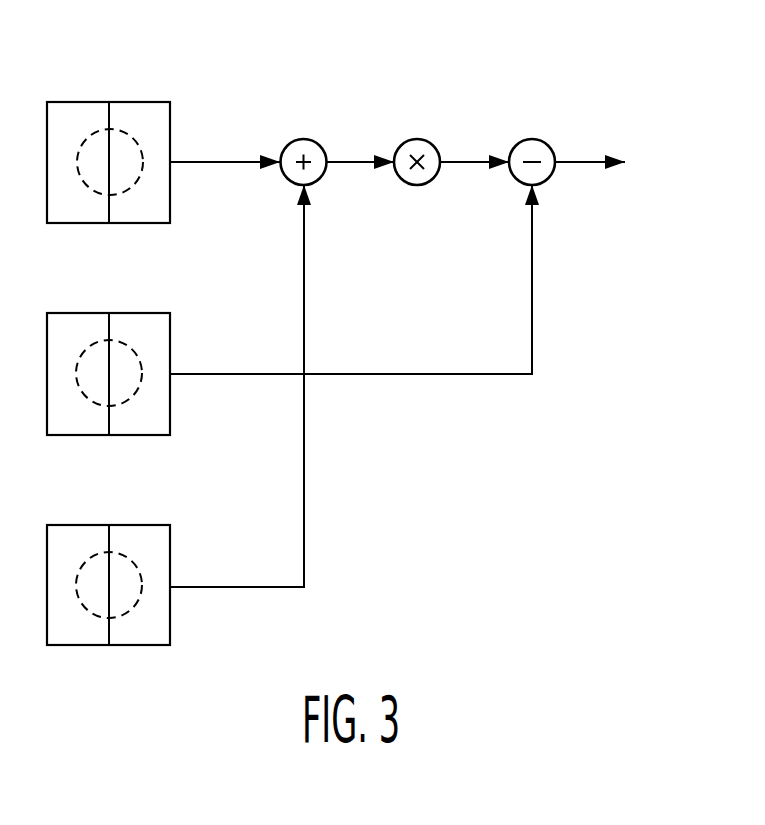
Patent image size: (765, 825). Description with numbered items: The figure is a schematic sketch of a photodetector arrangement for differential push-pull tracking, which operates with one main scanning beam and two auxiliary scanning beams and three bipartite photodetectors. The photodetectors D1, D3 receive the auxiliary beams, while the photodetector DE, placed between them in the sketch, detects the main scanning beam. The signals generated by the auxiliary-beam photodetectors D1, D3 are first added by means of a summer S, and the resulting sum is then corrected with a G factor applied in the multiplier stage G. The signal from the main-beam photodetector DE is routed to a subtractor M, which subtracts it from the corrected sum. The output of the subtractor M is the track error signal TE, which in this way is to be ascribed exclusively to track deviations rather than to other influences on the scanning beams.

The bipartite photodetector D1 is at (108, 142).
The second detector DE is at (108, 356).
The bipartite photodetector D3 is at (108, 566).
The summer S is at (316, 139).
The G factor G is at (427, 139).
The subtractor M is at (543, 139).
The track error signal TE is at (605, 162).